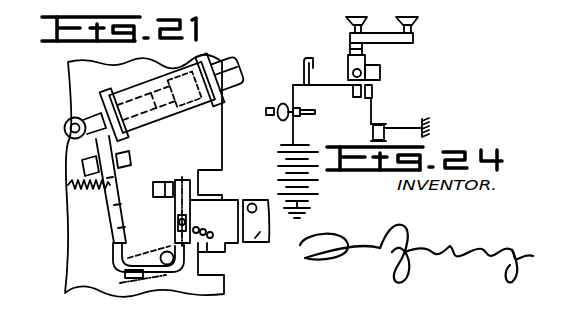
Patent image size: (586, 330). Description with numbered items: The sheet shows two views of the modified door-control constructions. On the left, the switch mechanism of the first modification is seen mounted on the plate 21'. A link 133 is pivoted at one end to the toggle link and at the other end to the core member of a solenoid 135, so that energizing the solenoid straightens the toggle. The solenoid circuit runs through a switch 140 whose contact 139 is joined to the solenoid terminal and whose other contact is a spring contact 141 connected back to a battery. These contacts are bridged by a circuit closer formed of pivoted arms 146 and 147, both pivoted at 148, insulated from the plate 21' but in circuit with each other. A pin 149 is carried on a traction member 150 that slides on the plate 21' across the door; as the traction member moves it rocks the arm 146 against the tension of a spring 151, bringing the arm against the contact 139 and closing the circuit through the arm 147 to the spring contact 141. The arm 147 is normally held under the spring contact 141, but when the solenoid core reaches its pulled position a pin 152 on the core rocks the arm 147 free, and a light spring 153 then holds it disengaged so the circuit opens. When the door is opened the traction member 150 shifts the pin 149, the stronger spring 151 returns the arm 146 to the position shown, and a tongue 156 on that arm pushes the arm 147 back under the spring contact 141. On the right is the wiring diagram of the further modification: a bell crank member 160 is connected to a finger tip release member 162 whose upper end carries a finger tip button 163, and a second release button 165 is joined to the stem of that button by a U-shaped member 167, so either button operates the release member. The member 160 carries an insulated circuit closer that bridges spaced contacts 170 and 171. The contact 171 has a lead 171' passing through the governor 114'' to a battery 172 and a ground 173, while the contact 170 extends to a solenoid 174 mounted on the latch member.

In FIG. 21, the plate 21' is at (157, 176).
In FIG. 21, the pin 152 is at (163, 80).
In FIG. 21, the solenoid 135 is at (236, 73).
In FIG. 21, the link 133 is at (70, 116).
In FIG. 21, the pivoted arm 147 is at (112, 218).
In FIG. 21, the spring contact 141 is at (131, 158).
In FIG. 21, the light spring 153 is at (72, 187).
In FIG. 21, the switch 140 is at (135, 255).
In FIG. 21, the pivot 148 is at (173, 265).
In FIG. 21, the tongue 156 is at (124, 277).
In FIG. 21, the contact 139 is at (159, 182).
In FIG. 21, the pivoted arm 146 is at (189, 192).
In FIG. 21, the pin 149 is at (253, 204).
In FIG. 21, the traction member 150 is at (256, 240).
In FIG. 21, the spring 151 is at (208, 248).
In FIG. 24, the finger tip button 163 is at (350, 22).
In FIG. 24, the second release button 165 is at (419, 25).
In FIG. 24, the U-shaped member 167 is at (386, 43).
In FIG. 24, the finger tip release member 162 is at (350, 49).
In FIG. 24, the bell crank member 160 is at (382, 76).
In FIG. 24, the lead 171' is at (324, 70).
In FIG. 24, the contact 171 is at (327, 94).
In FIG. 24, the contact 170 is at (368, 100).
In FIG. 24, the solenoid 174 is at (379, 127).
In FIG. 24, the governor 114'' is at (290, 110).
In FIG. 24, the battery 172 is at (315, 185).
In FIG. 24, the ground 173 is at (311, 214).